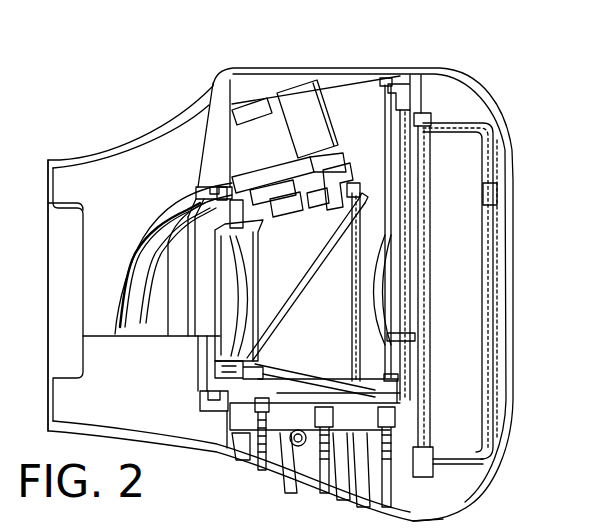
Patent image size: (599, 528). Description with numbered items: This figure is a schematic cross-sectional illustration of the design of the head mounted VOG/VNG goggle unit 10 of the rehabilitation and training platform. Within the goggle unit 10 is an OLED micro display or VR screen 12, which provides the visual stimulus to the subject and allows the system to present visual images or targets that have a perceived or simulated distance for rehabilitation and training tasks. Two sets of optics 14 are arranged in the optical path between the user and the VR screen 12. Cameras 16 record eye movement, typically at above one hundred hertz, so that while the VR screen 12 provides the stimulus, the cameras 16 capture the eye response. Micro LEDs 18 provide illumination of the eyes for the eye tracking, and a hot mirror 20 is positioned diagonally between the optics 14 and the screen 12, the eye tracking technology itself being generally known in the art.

The head mounted goggle unit 10 is at (503, 89).
The VR screen 12 is at (483, 394).
The optics 14 is at (234, 305).
The cameras 16 is at (272, 175).
The micro LEDs 18 is at (233, 218).
The mirror 20 is at (353, 230).